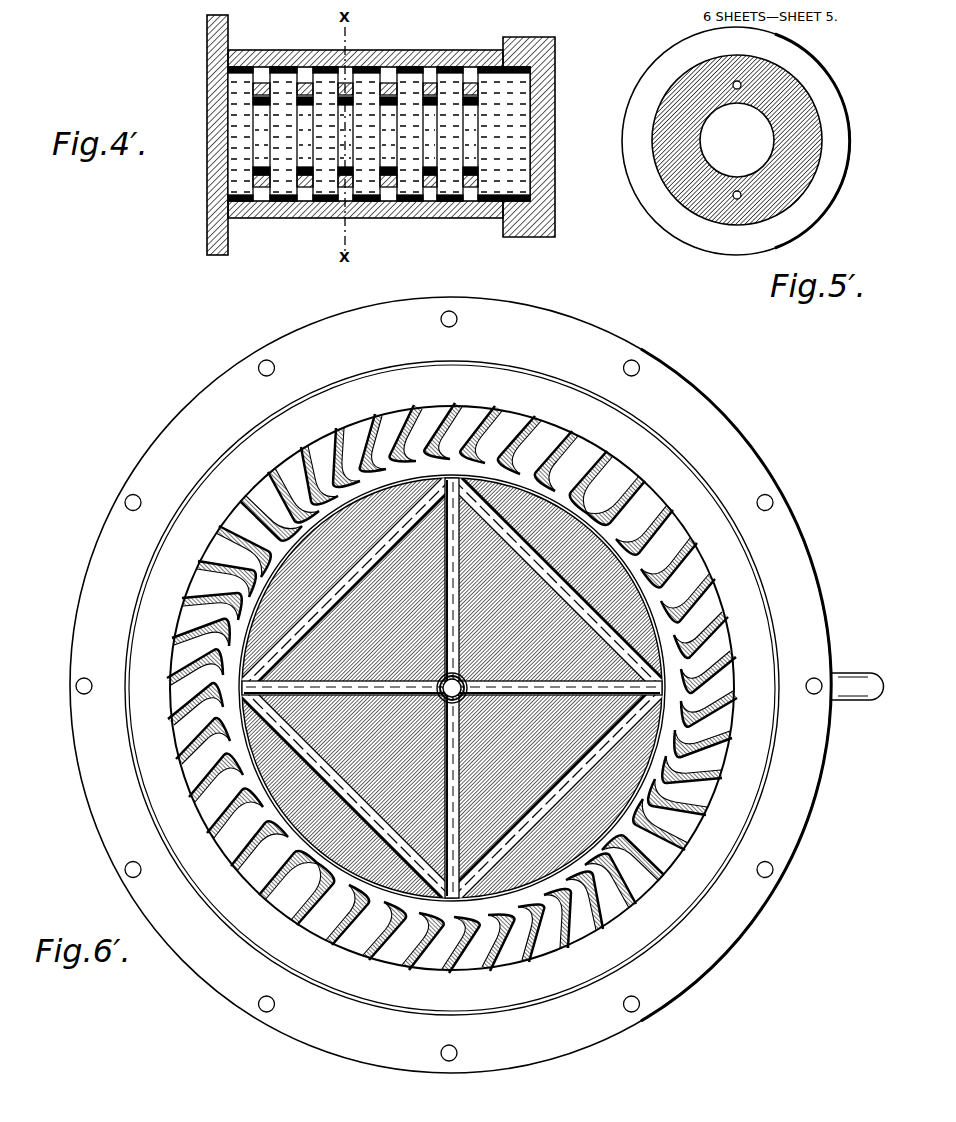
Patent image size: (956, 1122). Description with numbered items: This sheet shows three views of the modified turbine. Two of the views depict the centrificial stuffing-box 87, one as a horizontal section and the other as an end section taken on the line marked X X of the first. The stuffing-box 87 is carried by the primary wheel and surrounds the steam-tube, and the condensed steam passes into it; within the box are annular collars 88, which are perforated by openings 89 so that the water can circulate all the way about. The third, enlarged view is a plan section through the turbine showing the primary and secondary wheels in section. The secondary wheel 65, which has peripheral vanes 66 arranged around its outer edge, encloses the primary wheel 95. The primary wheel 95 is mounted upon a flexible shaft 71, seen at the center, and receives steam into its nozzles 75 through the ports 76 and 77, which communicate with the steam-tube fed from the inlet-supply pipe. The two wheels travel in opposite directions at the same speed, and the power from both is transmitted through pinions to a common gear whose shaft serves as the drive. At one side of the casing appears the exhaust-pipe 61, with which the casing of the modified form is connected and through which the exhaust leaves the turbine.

In FIG. 6′, the exhaust-pipe 61 is at (860, 704).
In FIG. 6′, the secondary wheel 65 is at (190, 628).
In FIG. 6′, the peripheral vanes 66 is at (500, 960).
In FIG. 6′, the flexible shaft 71 is at (446, 680).
In FIG. 6′, the nozzles 75 is at (606, 768).
In FIG. 6′, the port 76 is at (462, 696).
In FIG. 6′, the port 77 is at (460, 568).
In FIG. 6′, the primary wheel 95 is at (452, 688).
In FIG. 4′, the centrificial stuffing-box 87 is at (286, 220).
In FIG. 5′, the centrificial stuffing-box 87 is at (832, 186).
In FIG. 4′, the annular collars 88 is at (210, 104).
In FIG. 5′, the annular collars 88 is at (700, 148).
In FIG. 4′, the openings 89 is at (212, 84).
In FIG. 5′, the openings 89 is at (737, 90).